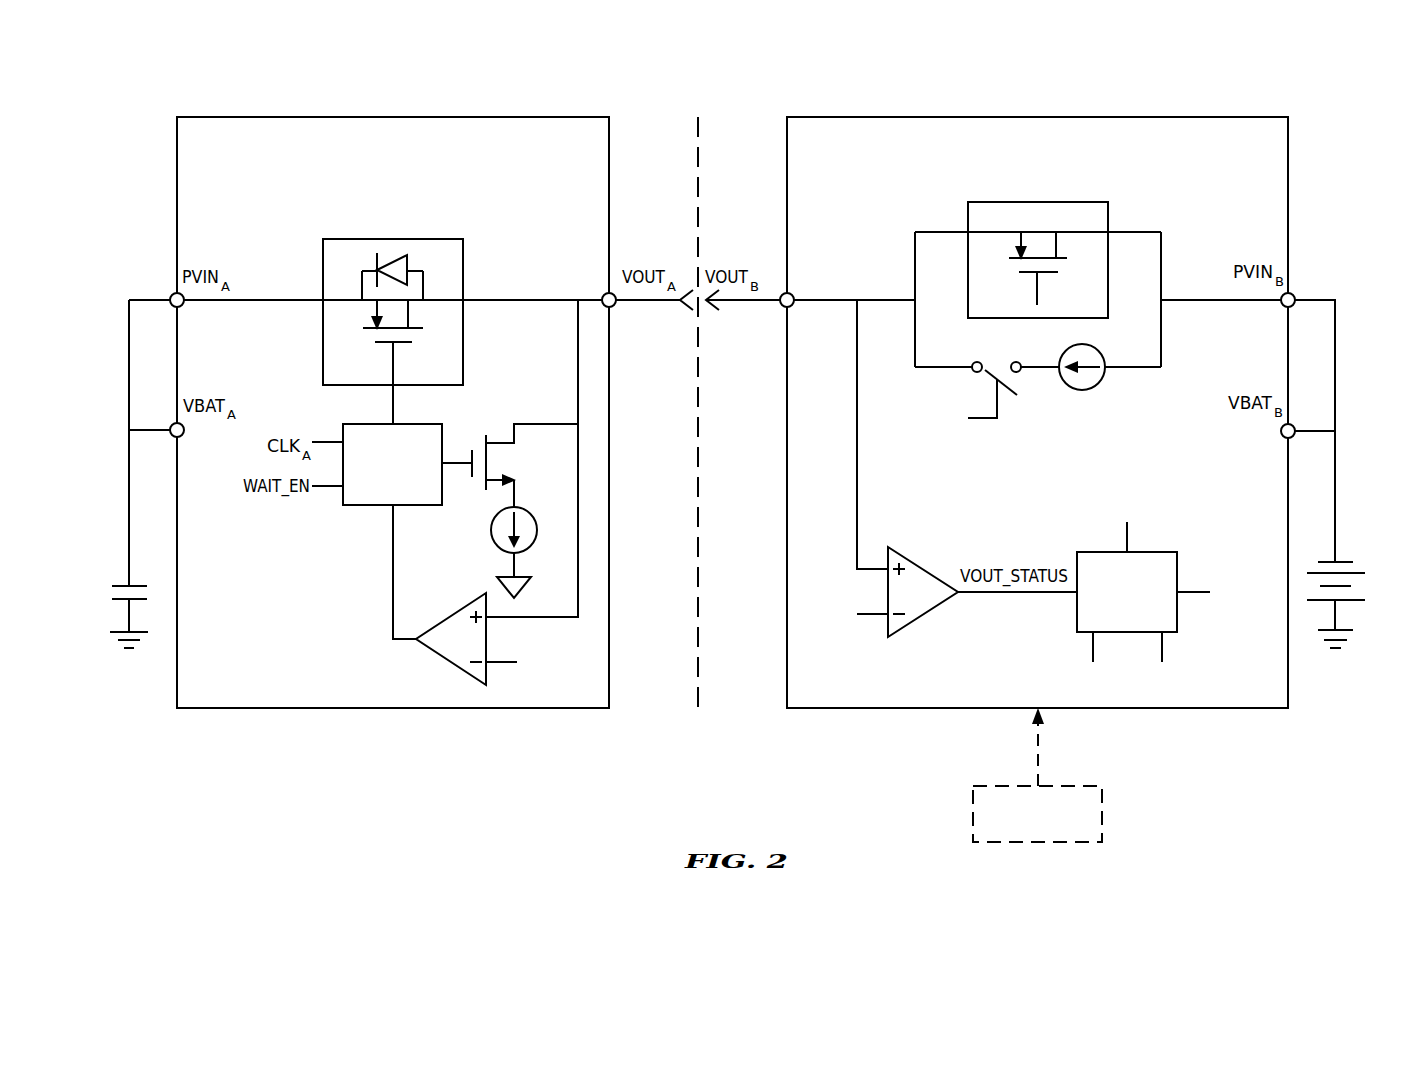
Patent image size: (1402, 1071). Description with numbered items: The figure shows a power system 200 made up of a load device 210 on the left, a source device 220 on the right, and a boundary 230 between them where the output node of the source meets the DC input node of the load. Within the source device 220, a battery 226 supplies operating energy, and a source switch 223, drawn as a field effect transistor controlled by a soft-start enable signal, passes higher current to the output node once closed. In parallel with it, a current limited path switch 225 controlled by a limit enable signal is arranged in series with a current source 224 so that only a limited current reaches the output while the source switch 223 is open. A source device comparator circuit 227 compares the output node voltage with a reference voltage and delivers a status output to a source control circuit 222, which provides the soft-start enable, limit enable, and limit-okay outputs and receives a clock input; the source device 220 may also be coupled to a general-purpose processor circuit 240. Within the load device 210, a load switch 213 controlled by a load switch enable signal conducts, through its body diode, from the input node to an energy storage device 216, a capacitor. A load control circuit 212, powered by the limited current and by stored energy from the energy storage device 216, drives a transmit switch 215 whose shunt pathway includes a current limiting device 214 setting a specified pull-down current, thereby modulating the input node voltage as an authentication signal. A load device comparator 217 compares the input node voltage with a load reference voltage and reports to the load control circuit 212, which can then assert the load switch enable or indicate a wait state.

The power system 200 is at (176, 74).
The load device 210 is at (393, 116).
The load control circuit 212 is at (410, 424).
The load switch 213 is at (393, 239).
The current limiting device 214 is at (490, 532).
The transmit switch 215 is at (502, 448).
The energy storage device 216 is at (118, 585).
The load device comparator 217 is at (452, 664).
The source device 220 is at (1038, 117).
The source control circuit 222 is at (1148, 552).
The source switch 223 is at (1040, 202).
The current source 224 is at (1097, 352).
The current limited path switch 225 is at (990, 367).
The battery 226 is at (1340, 560).
The source device comparator circuit 227 is at (923, 612).
The interface boundary 230 is at (700, 206).
The general-purpose processor circuit 240 is at (1063, 786).